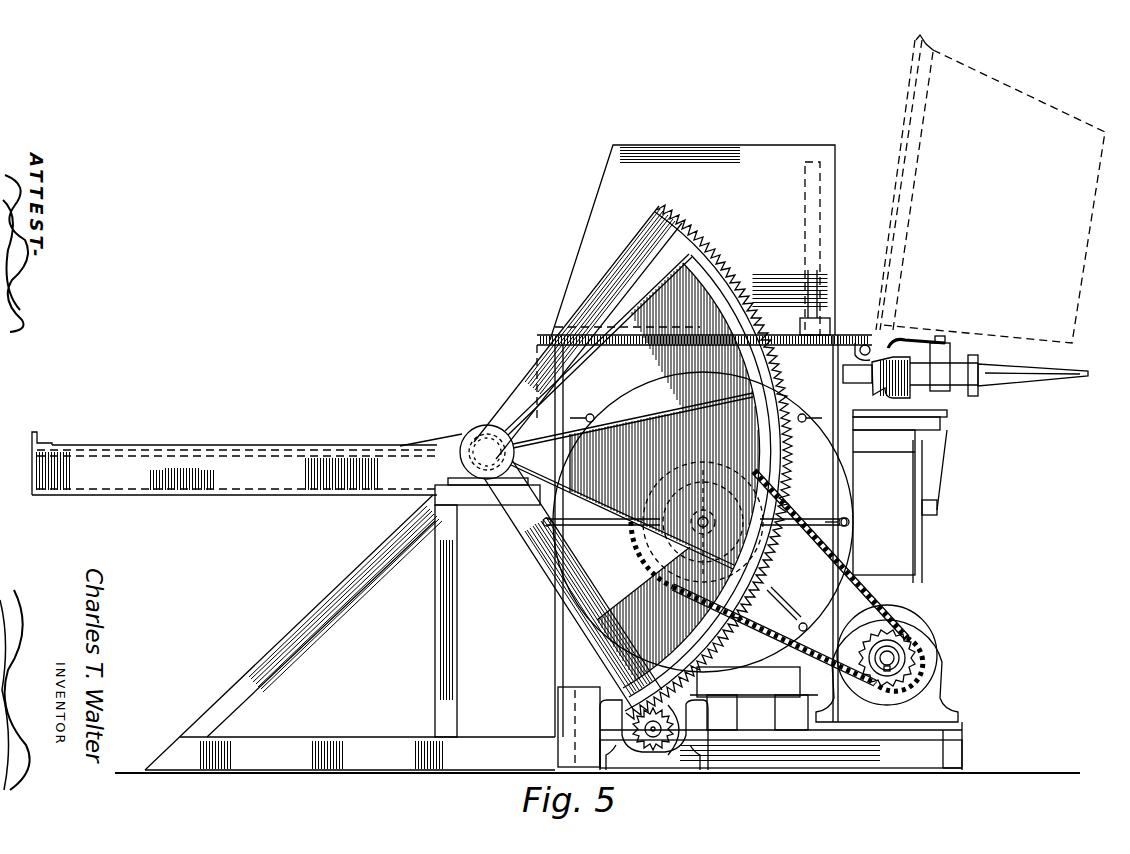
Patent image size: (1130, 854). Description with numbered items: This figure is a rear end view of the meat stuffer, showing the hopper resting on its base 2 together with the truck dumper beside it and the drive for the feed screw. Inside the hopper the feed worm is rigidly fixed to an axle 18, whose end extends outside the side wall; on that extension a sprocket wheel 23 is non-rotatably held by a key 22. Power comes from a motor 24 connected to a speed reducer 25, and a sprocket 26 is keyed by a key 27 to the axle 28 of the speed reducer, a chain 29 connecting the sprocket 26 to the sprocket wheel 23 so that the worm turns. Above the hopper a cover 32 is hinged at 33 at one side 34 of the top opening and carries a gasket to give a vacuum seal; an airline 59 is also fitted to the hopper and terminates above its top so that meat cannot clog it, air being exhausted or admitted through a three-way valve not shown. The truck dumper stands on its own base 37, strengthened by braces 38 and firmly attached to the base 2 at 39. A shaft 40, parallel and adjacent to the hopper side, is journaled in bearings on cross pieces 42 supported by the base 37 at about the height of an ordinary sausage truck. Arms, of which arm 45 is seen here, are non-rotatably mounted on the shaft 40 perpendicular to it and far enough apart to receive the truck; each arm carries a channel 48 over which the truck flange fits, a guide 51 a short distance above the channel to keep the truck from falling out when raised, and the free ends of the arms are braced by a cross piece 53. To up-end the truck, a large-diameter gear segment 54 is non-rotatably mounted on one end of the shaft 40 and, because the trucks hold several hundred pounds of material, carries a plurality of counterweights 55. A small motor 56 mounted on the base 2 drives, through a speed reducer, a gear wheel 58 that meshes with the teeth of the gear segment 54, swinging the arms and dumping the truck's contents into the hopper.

The base 2 is at (940, 745).
The axle 18 is at (690, 515).
The key 22 is at (720, 510).
The sprocket wheel 23 is at (768, 587).
The motor 24 is at (925, 605).
The speed reducer 25 is at (940, 664).
The sprocket 26 is at (880, 632).
The key 27 is at (912, 679).
The axle of speed reducer 28 is at (895, 657).
The chain 29 is at (842, 660).
The cover 32 is at (612, 190).
The hinge 33 is at (875, 340).
The hinged side of opening 34 is at (840, 325).
The base of truck dumper 37 is at (268, 752).
The brace 38 is at (322, 612).
The attachment of dumper base 39 is at (555, 745).
The shaft 40 is at (468, 440).
The cross piece 42 is at (464, 498).
The arm 45 is at (278, 495).
The channel 48 is at (201, 490).
The guide 51 is at (130, 445).
The cross piece 53 is at (40, 432).
The gear segment 54 is at (724, 256).
The counterweight 55 is at (678, 287).
The motor 56 is at (700, 742).
The gear wheel 58 is at (660, 760).
The airline 59 is at (820, 212).